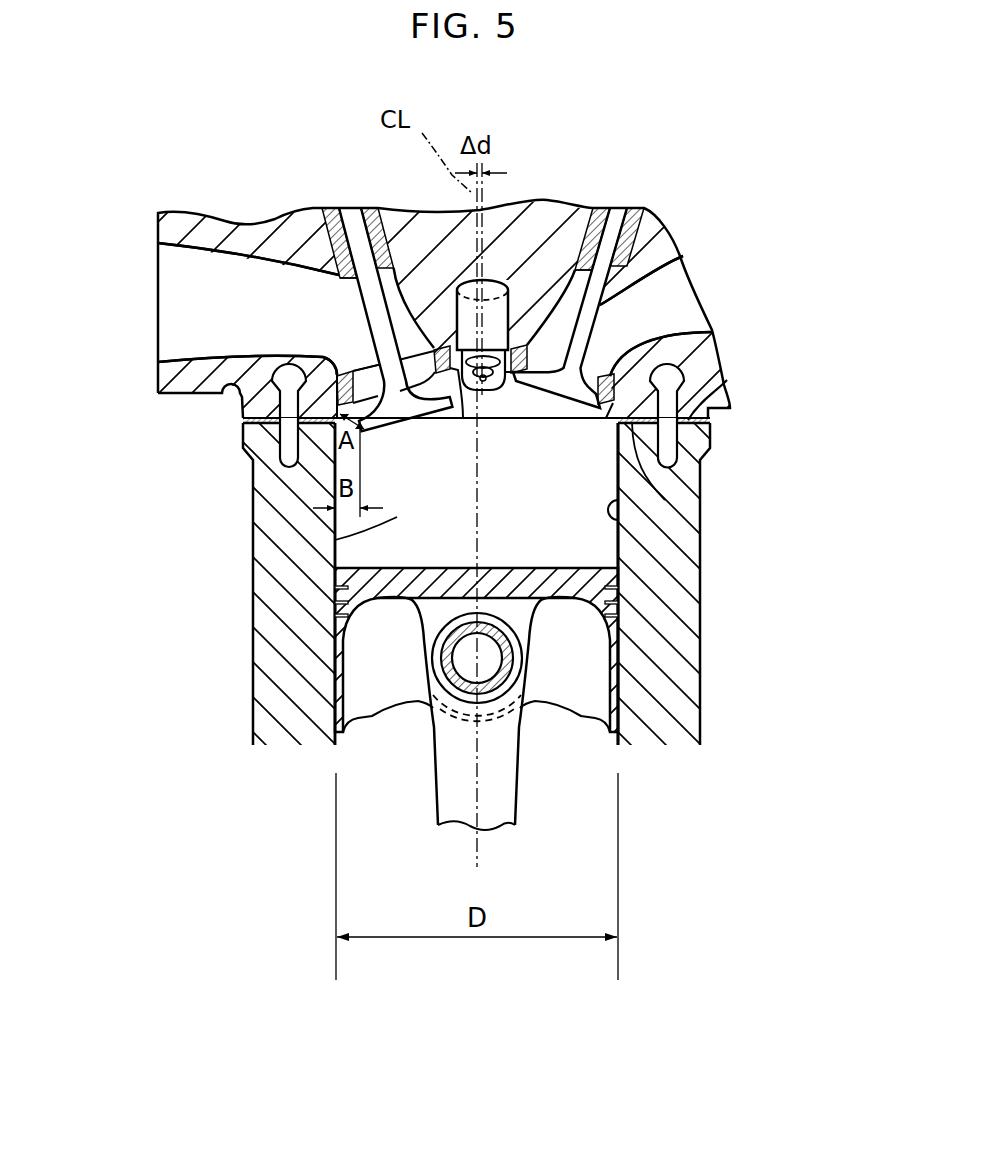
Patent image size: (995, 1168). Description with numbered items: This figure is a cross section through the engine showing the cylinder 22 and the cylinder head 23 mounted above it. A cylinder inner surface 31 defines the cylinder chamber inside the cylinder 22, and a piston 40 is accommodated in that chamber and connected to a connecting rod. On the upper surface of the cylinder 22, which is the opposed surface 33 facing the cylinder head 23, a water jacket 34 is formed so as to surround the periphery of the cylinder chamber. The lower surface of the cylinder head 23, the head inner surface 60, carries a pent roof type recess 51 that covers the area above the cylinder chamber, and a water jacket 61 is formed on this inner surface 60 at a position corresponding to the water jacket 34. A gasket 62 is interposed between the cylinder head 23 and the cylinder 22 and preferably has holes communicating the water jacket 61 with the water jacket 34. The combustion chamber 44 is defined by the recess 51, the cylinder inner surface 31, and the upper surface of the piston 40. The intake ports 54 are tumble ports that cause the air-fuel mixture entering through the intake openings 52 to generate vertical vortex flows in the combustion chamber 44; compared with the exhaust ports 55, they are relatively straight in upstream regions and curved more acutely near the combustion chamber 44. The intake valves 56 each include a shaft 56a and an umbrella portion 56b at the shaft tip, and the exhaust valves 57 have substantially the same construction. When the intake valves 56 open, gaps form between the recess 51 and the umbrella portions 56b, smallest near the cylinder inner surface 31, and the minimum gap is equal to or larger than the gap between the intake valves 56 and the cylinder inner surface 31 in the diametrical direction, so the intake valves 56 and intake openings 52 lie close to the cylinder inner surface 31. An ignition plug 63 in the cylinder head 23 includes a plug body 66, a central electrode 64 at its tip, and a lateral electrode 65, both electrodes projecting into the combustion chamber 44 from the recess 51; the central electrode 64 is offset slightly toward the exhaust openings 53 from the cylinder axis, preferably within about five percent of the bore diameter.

The cylinder 22 is at (253, 607).
The cylinder head 23 is at (187, 395).
The cylinder inner surface 31 is at (620, 518).
The opposed surface 33 is at (700, 403).
The water jacket 34 is at (282, 445).
The piston 40 is at (518, 566).
The combustion chamber 44 is at (335, 540).
The recess 51 is at (665, 500).
The intake openings 52 is at (416, 360).
The exhaust openings 53 is at (592, 382).
The intake ports 54 is at (187, 297).
The exhaust ports 55 is at (673, 303).
The intake valves 56 is at (271, 290).
The shaft 56a is at (366, 326).
The umbrella portion 56b is at (365, 347).
The exhaust valves 57 is at (683, 256).
The head inner surface 60 is at (692, 483).
The water jacket 61 is at (287, 385).
The gasket 62 is at (710, 422).
The ignition plug 63 is at (557, 253).
The central electrode 64 is at (477, 392).
The lateral electrode 65 is at (487, 385).
The plug body 66 is at (513, 315).